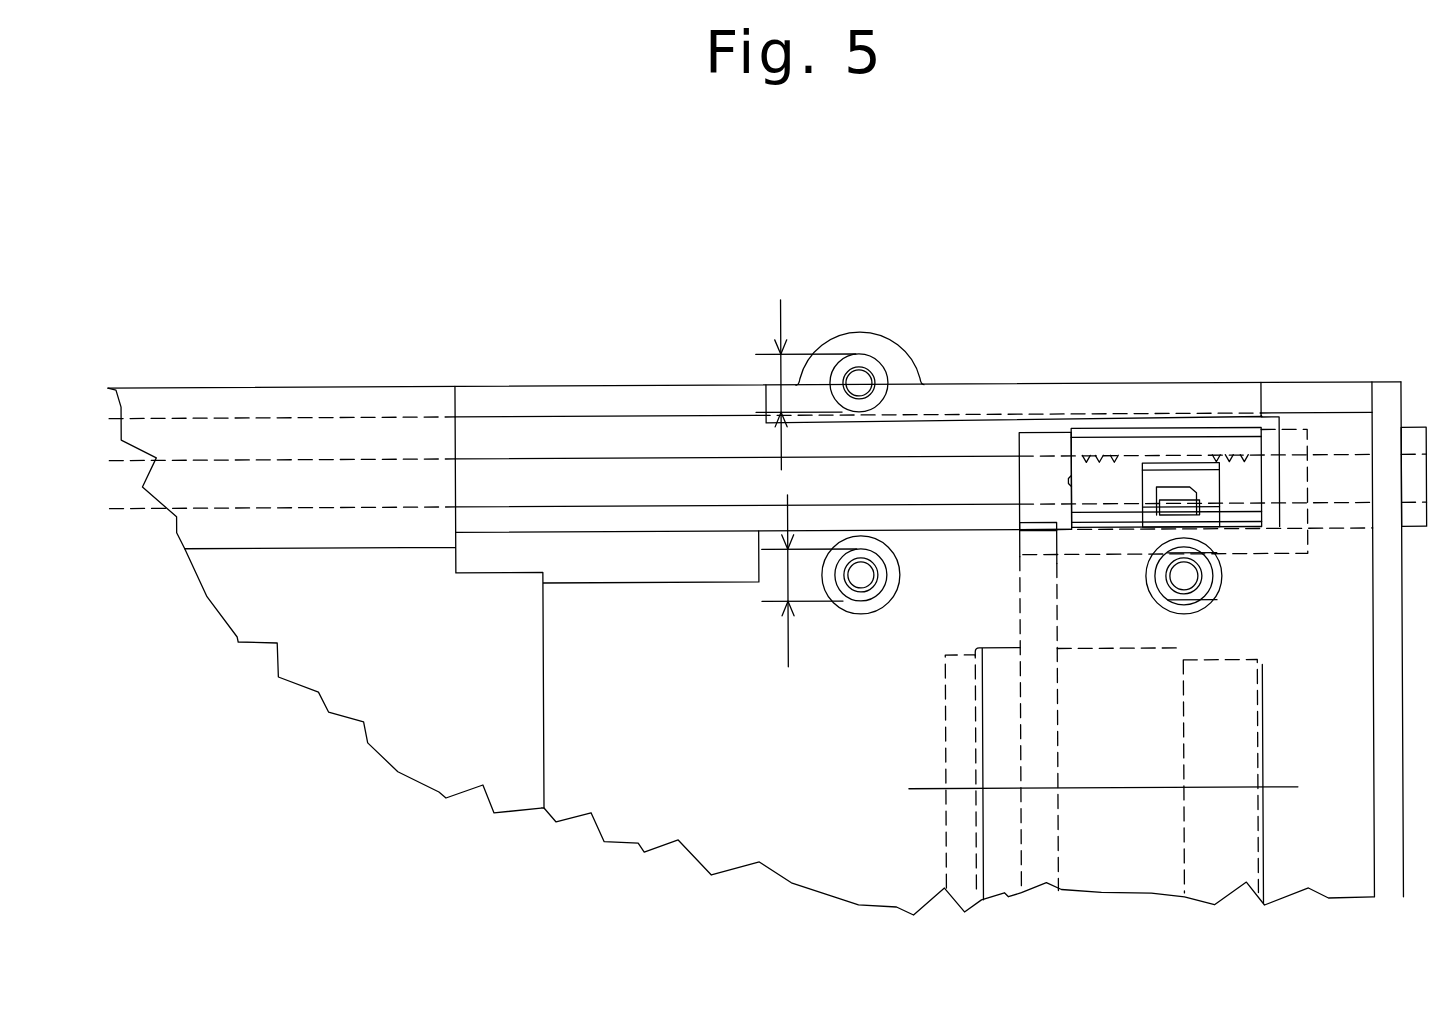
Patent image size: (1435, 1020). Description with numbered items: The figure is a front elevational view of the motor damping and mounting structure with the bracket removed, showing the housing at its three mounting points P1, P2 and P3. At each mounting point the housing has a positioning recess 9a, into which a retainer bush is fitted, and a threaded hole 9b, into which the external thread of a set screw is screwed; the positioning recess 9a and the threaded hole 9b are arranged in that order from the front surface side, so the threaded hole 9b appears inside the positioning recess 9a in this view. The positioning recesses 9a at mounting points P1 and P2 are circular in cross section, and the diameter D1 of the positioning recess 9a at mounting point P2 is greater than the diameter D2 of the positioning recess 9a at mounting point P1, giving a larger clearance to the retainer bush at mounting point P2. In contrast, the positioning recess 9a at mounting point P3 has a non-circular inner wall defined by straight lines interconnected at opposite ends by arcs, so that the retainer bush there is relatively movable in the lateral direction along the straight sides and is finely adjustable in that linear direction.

The positioning recess 9a is at (879, 365).
The threaded hole 9b is at (858, 380).
The diameter of the positioning recess at mounting point P2 D1 is at (782, 388).
The diameter of the positioning recess at mounting point P1 D2 is at (787, 572).
The mounting point P1 is at (868, 637).
The mounting point P2 is at (870, 295).
The mounting point P3 is at (1268, 629).